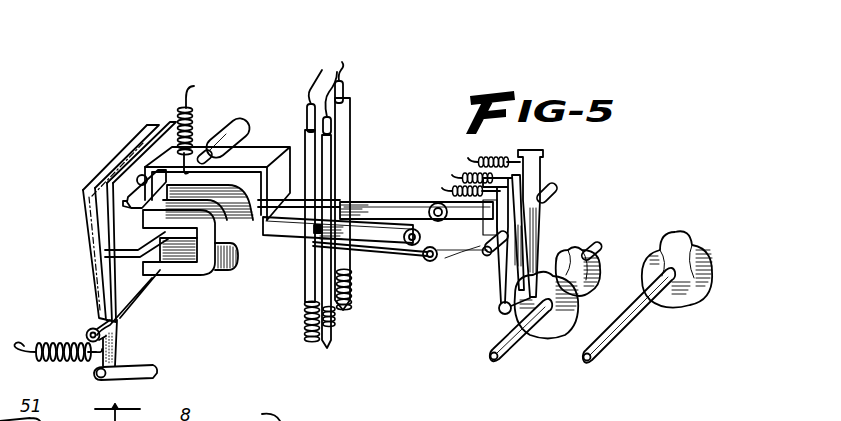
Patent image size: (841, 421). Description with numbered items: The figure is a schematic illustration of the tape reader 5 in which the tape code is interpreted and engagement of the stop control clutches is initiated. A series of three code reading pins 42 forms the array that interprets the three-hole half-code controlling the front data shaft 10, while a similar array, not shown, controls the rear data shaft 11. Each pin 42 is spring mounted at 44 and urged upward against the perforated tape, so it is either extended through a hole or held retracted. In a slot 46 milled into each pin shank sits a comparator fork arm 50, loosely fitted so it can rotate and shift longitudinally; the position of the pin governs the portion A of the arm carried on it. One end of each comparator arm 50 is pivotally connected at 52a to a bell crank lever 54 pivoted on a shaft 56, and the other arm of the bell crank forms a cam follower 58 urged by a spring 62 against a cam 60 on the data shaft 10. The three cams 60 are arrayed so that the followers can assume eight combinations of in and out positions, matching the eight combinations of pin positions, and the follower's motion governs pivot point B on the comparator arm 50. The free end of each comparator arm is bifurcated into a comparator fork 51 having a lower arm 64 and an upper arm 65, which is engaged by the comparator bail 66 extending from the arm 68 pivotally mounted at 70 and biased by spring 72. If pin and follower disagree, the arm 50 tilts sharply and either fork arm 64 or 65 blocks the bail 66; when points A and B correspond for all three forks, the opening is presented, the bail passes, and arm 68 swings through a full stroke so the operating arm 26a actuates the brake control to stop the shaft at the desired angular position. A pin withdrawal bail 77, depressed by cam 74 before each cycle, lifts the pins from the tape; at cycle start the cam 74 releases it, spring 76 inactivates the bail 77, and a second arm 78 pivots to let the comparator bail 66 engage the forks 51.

The tape reader 5 is at (405, 99).
The front data shaft 10 is at (494, 357).
The rear data shaft 11 is at (587, 360).
The operating arm 26a is at (150, 364).
The code reading pins 42 is at (341, 60).
The spring mounting 44 is at (309, 350).
The slot 46 is at (345, 231).
The comparator fork arm 50 is at (264, 240).
The comparator fork 51 is at (173, 288).
The pivotal connection 52a is at (420, 258).
The bell crank lever 54 is at (468, 240).
The shaft 56 is at (492, 250).
The cam follower 58 is at (500, 314).
The cam 60 is at (568, 262).
The spring 62 is at (476, 160).
The lower arm of fork 64 is at (147, 272).
The upper arm of fork 65 is at (143, 221).
The comparator bail 66 is at (120, 252).
The arm 68 is at (100, 295).
The pivot 70 is at (90, 326).
The spring 72 is at (58, 344).
The cam 74 is at (248, 130).
The spring 76 is at (192, 112).
The pin withdrawal bail 77 is at (265, 155).
The second arm 78 is at (130, 196).
The portion A of comparator arm A is at (320, 226).
The pivot point B is at (406, 231).